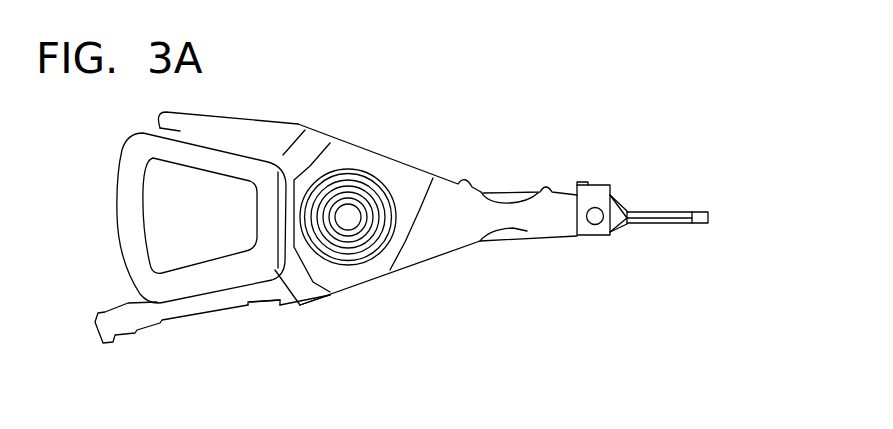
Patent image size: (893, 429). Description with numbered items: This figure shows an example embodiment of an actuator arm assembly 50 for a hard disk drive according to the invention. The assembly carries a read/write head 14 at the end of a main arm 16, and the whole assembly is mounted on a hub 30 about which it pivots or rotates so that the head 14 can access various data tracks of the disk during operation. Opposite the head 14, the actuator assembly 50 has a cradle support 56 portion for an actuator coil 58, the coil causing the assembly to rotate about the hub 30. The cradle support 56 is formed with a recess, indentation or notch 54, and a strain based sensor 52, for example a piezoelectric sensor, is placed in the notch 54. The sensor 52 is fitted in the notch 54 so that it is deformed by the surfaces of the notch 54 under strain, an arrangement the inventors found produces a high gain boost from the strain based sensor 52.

The read/write head 14 is at (710, 210).
The main arm 16 is at (465, 205).
The hub 30 is at (348, 217).
The actuator arm assembly 50 is at (378, 312).
The strain based sensor 52 is at (260, 307).
The notch 54 is at (278, 307).
The cradle support 56 is at (197, 312).
The actuator coil 58 is at (245, 180).